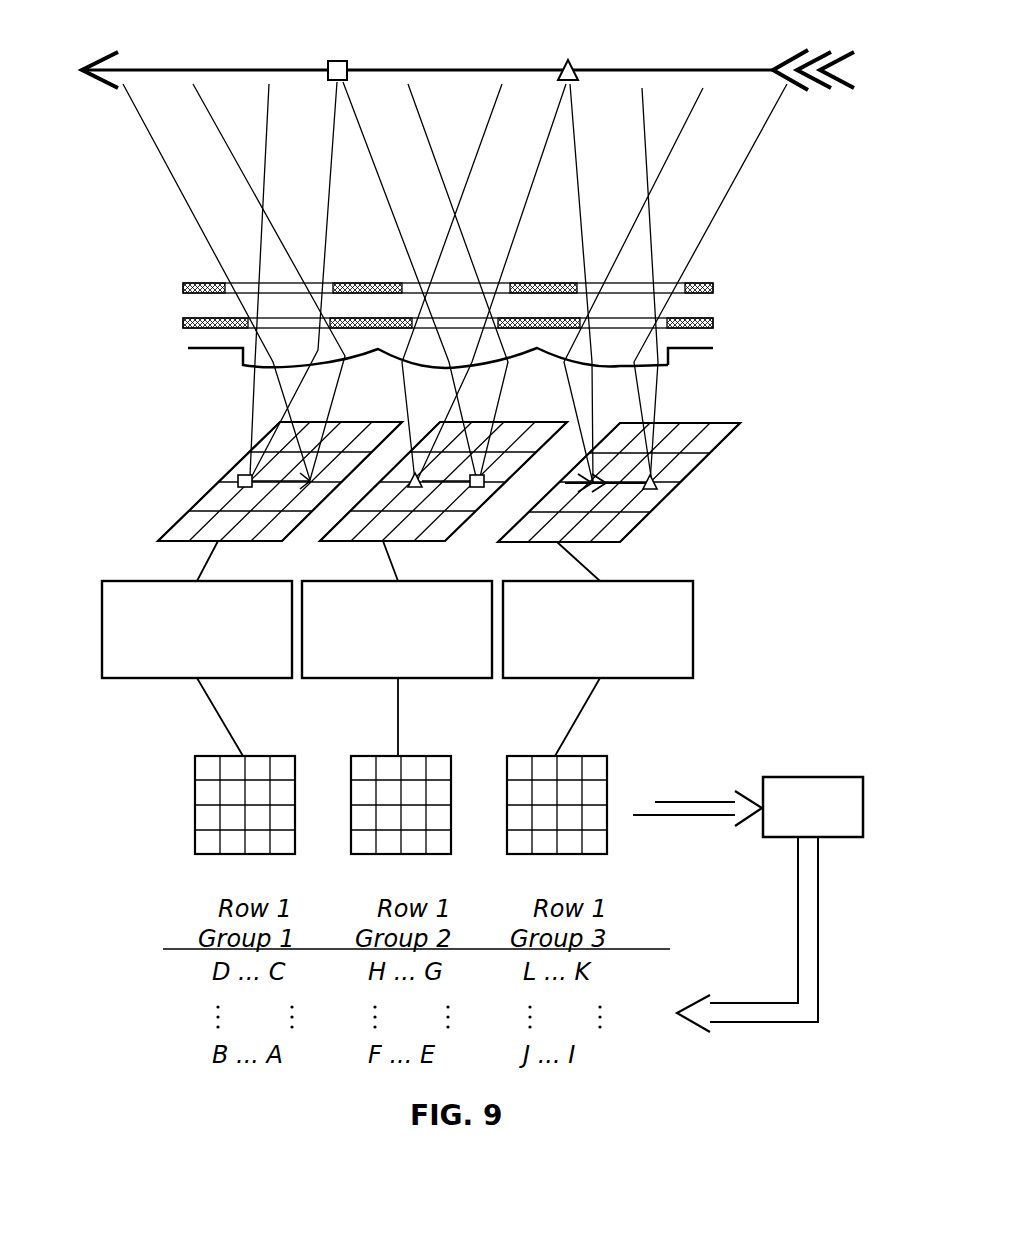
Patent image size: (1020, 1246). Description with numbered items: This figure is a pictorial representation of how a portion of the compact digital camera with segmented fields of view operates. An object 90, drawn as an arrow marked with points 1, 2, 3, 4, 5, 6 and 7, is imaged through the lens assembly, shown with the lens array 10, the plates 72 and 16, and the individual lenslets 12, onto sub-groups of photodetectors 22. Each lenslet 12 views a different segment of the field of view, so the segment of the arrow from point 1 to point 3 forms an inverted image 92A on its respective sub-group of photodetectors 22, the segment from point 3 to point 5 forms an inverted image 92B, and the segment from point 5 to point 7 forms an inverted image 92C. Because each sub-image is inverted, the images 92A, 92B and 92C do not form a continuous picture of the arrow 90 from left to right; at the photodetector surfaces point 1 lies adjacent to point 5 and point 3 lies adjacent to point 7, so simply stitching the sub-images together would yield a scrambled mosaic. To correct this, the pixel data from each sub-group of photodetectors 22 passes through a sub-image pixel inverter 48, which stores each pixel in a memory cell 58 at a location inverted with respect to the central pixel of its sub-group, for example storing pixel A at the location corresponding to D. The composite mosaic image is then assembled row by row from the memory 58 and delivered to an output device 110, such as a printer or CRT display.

The object 90 is at (790, 82).
The aperture mask plate 72 is at (185, 284).
The lenticular lens array mask 16 is at (185, 320).
The lens array 10 is at (683, 346).
The lenslet 12 is at (655, 357).
The sub-group of photodetectors 22 is at (740, 423).
The inverted image 92A is at (193, 541).
The inverted image 92B is at (378, 548).
The inverted image 92C is at (627, 537).
The sub-image pixel inverter 48 is at (693, 640).
The memory cell 58 is at (604, 764).
The output device 110 is at (793, 777).
The point 1 is at (216, 249).
The point 2 is at (269, 249).
The point 3 is at (363, 249).
The point 4 is at (455, 249).
The point 5 is at (505, 250).
The point 6 is at (633, 250).
The point 7 is at (718, 250).